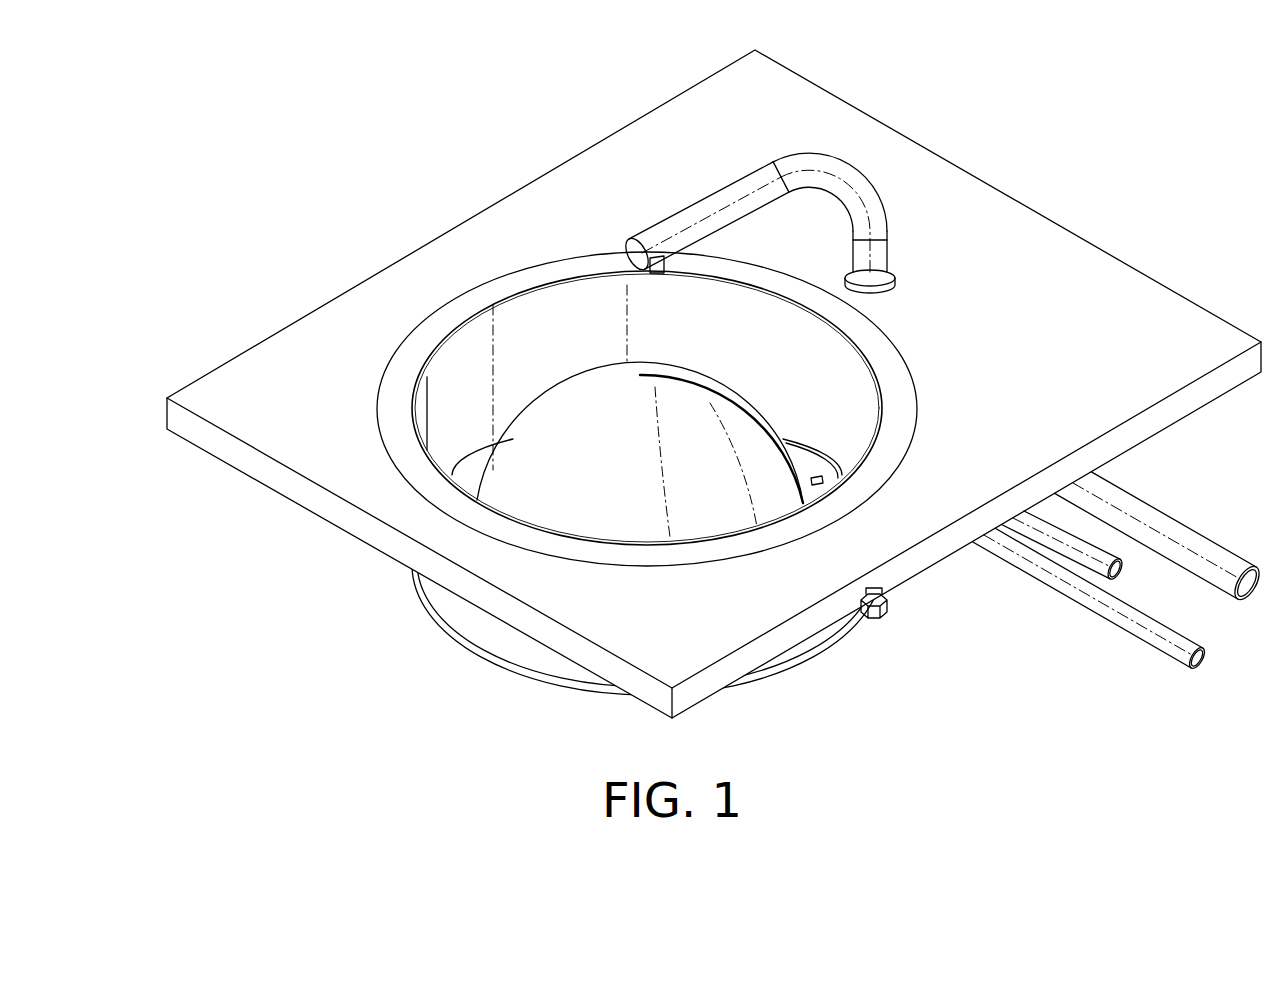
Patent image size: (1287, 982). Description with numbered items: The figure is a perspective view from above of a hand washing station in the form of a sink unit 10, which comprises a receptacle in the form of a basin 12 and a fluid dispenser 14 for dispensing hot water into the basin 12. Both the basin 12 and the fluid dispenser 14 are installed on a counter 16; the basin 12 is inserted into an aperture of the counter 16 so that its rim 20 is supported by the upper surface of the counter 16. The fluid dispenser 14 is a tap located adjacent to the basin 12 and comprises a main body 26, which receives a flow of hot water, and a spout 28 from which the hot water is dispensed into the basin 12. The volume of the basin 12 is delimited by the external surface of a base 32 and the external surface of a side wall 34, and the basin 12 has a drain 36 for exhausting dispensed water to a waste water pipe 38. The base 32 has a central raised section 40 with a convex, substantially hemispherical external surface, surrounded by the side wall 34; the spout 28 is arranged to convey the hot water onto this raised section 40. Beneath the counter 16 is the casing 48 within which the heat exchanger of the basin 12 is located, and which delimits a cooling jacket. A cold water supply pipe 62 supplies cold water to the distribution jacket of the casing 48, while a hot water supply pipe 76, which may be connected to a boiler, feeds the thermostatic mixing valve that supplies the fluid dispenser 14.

The sink unit 10 is at (657, 409).
The basin 12 is at (836, 356).
The fluid dispenser 14 is at (740, 166).
The counter 16 is at (1050, 242).
The rim 20 is at (903, 425).
The main body 26 is at (838, 165).
The spout 28 is at (656, 276).
The base 32 is at (810, 468).
The side wall 34 is at (437, 392).
The drain 36 is at (820, 484).
The waste water pipe 38 is at (1183, 533).
The raised section 40 is at (623, 520).
The casing 48 is at (478, 625).
The cold water supply pipe 62 is at (1110, 615).
The hot water supply pipe 76 is at (1060, 543).